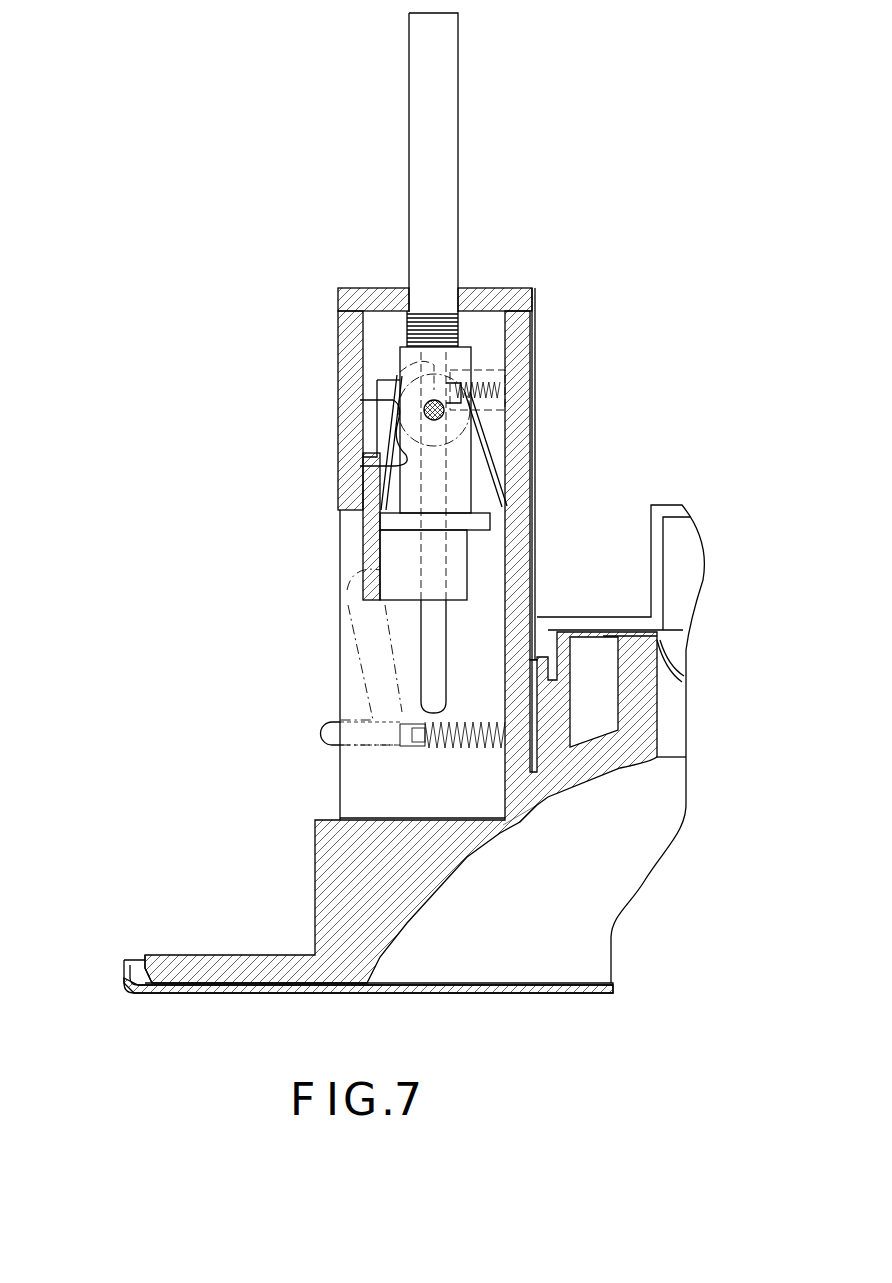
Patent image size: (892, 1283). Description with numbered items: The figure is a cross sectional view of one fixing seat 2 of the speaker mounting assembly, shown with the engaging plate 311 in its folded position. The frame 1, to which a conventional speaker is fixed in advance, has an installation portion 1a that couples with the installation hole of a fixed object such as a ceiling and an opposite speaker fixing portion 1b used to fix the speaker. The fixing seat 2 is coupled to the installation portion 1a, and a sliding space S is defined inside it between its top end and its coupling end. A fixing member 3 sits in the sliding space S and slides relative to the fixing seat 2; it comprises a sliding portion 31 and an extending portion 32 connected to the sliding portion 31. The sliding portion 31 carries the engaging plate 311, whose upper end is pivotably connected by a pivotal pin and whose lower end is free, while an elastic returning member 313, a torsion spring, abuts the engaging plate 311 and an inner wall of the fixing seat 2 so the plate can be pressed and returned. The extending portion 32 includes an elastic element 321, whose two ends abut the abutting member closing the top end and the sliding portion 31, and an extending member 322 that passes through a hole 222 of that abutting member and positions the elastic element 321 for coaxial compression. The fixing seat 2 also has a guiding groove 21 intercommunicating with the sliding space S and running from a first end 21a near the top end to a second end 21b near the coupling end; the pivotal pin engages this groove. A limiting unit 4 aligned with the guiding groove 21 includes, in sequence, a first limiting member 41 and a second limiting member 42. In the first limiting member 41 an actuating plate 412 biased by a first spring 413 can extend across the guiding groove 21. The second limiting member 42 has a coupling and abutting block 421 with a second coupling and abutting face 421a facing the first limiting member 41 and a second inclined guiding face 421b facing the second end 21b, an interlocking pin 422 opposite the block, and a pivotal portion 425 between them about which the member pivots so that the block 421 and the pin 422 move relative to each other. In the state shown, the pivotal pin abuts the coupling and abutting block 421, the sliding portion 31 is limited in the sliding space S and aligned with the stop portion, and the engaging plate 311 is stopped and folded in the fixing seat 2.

The frame 1 is at (335, 886).
The installation portion 1a is at (385, 820).
The speaker fixing portion 1b is at (222, 983).
The fixing seat 2 is at (540, 502).
The guiding groove 21 is at (430, 622).
The first end 21a is at (455, 360).
The second end 21b is at (430, 708).
The hole 222 is at (460, 300).
The fixing member 3 is at (385, 345).
The sliding portion 31 is at (400, 355).
The engaging plate 311 is at (375, 540).
The elastic returning member 313 is at (480, 426).
The extending portion 32 is at (354, 162).
The elastic element 321 is at (400, 312).
The extending member 322 is at (420, 85).
The limiting unit 4 is at (365, 654).
The first limiting member 41 is at (500, 355).
The actuating plate 412 is at (380, 376).
The first spring 413 is at (495, 386).
The second limiting member 42 is at (490, 556).
The coupling and abutting block 421 is at (271, 442).
The second coupling and abutting face 421a is at (400, 400).
The second inclined guiding face 421b is at (380, 470).
The interlocking pin 422 is at (412, 745).
The pivotal portion 425 is at (350, 580).
The sliding space S is at (480, 657).